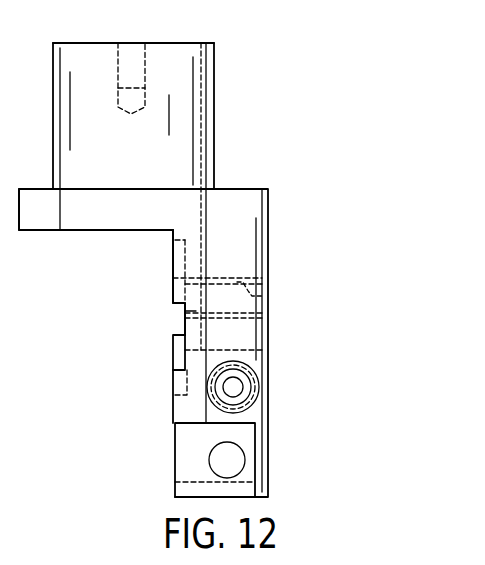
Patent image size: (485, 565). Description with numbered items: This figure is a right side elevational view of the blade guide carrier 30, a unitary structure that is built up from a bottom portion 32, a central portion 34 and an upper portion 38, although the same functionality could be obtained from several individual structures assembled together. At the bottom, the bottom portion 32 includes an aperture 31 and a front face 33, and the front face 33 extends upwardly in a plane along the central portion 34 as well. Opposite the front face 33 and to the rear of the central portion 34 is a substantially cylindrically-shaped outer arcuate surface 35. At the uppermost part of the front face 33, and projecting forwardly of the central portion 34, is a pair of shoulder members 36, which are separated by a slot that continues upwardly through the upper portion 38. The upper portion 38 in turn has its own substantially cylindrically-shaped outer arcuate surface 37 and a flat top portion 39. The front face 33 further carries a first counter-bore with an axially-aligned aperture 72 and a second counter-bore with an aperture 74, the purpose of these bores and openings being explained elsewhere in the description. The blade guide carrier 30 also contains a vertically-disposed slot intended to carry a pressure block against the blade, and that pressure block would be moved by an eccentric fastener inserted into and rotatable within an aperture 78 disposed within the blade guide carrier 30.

The blade guide carrier 30 is at (298, 130).
The aperture 31 is at (242, 456).
The bottom portion 32 is at (192, 450).
The front face 33 is at (173, 258).
The central portion 34 is at (240, 334).
The outer arcuate surface 35 is at (240, 255).
The shoulder members 36 is at (72, 212).
The outer arcuate surface 37 is at (85, 112).
The upper portion 38 is at (217, 118).
The flat top portion 39 is at (170, 43).
The aperture 72 is at (275, 303).
The aperture 74 is at (212, 321).
The aperture 78 is at (244, 385).